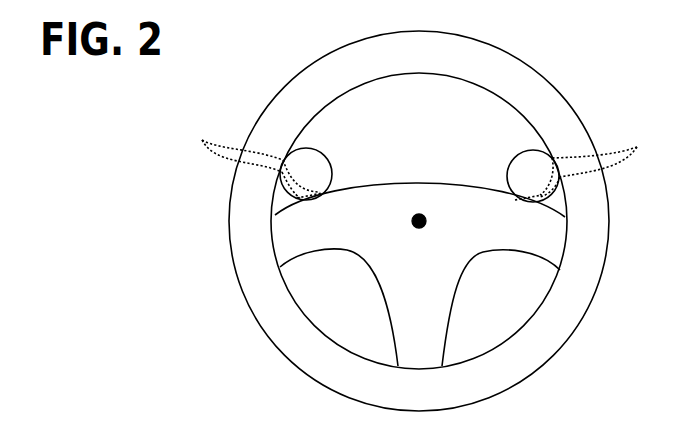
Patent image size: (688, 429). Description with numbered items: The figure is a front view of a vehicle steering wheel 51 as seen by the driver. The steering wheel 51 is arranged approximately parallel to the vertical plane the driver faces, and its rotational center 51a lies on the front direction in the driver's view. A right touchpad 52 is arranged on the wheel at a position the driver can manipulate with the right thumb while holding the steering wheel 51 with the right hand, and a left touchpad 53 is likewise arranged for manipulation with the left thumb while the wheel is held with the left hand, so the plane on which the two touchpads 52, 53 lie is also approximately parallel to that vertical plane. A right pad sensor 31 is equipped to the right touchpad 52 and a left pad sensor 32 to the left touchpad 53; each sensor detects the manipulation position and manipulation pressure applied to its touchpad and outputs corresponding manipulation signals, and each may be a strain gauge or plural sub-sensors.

The steering wheel 51 is at (513, 57).
The rotational center 51a is at (426, 225).
The right touchpad 52 is at (537, 168).
The left touchpad 53 is at (305, 165).
The right pad sensor 31 is at (581, 158).
The left pad sensor 32 is at (255, 153).